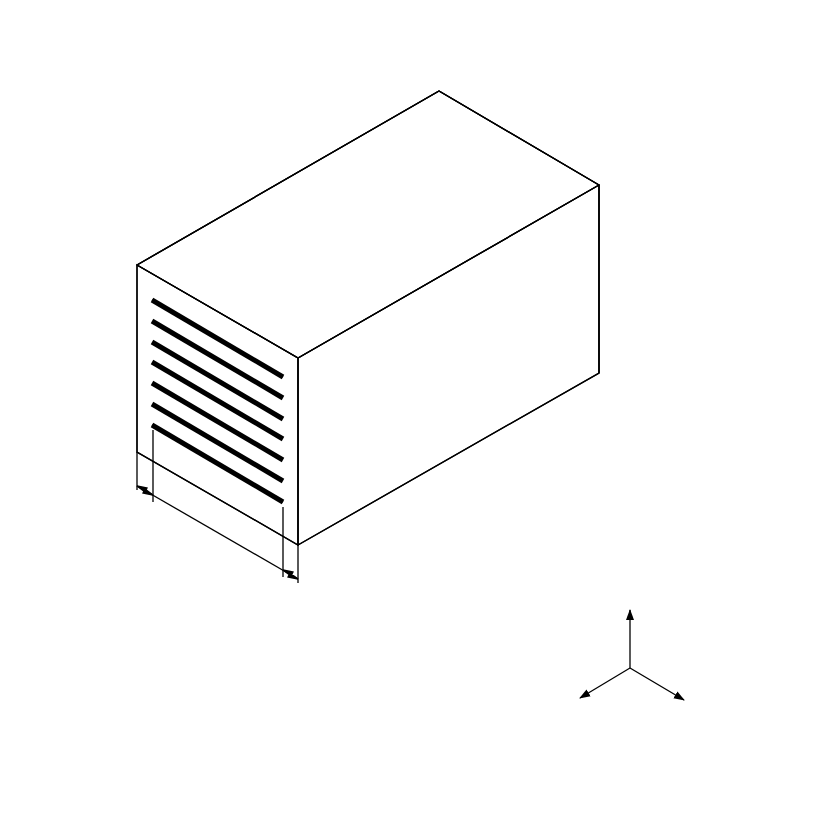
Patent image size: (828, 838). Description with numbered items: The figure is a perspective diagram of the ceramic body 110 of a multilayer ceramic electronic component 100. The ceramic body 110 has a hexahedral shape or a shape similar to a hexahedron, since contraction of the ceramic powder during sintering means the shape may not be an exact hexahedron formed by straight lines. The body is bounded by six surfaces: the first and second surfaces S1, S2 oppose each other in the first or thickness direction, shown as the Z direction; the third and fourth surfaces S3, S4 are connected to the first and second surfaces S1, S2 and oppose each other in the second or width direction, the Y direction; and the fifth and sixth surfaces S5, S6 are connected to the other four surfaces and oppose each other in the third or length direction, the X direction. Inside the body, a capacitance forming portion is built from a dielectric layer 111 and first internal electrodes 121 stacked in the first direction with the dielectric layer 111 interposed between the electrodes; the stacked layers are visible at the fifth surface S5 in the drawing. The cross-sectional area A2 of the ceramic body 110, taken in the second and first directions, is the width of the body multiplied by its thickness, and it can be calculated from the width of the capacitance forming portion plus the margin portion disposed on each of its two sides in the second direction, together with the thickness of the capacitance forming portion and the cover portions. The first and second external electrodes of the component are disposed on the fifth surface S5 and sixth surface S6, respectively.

The multilayer ceramic electronic component 100 is at (131, 29).
The ceramic body 110 is at (302, 203).
The dielectric layer 111 is at (178, 327).
The first internal electrode 121 is at (167, 315).
The area of the cross-sectional surface of the ceramic body A2 is at (197, 377).
The first surface S1 is at (373, 165).
The second surface S2 is at (415, 436).
The third surface S3 is at (568, 307).
The fourth surface S4 is at (240, 240).
The fifth surface S5 is at (197, 424).
The sixth surface S6 is at (521, 177).